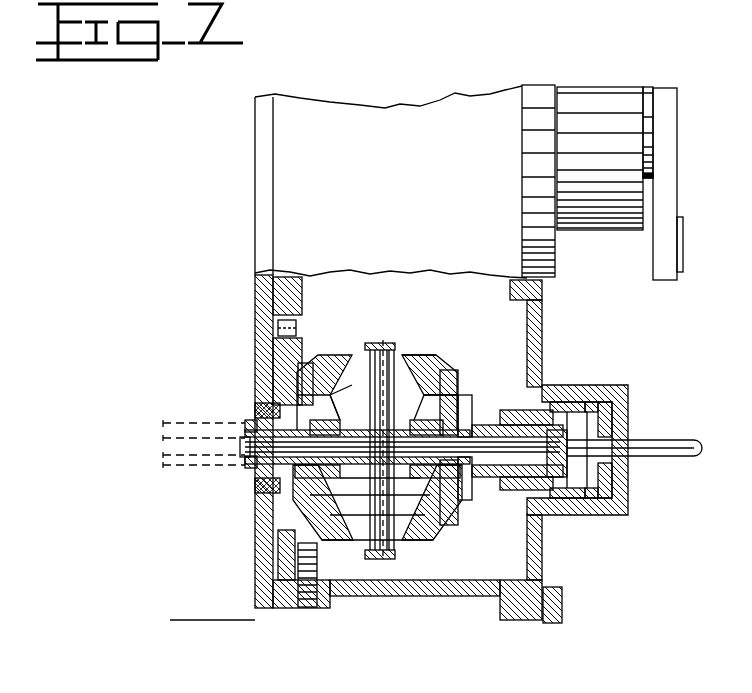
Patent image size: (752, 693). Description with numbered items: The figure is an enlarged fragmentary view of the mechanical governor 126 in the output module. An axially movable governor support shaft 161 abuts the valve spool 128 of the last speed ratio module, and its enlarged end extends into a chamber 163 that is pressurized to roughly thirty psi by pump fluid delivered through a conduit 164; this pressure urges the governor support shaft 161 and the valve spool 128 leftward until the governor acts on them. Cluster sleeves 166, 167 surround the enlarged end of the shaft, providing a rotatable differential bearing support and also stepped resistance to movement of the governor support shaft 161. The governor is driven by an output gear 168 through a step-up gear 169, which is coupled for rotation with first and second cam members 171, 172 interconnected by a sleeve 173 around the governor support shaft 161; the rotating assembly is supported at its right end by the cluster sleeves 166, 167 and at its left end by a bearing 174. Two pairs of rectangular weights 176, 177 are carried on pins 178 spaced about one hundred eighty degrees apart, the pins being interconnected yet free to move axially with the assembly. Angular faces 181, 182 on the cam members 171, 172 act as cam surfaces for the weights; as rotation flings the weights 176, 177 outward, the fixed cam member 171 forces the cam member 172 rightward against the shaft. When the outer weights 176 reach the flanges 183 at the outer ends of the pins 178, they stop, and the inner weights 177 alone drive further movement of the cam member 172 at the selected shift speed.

The mechanical governor 126 is at (480, 597).
The valve spool 128 is at (150, 462).
The governor support shaft 161 is at (253, 468).
The chamber 163 is at (620, 416).
The conduit 164 is at (668, 456).
The cluster sleeve 166 is at (553, 388).
The cluster sleeve 167 is at (592, 390).
The output gear 168 is at (285, 278).
The step-up gear 169 is at (283, 327).
The first cam member 171 is at (300, 372).
The second cam member 172 is at (440, 358).
The sleeve 173 is at (352, 385).
The bearing 174 is at (253, 412).
The weight 176 is at (352, 362).
The weight 177 is at (456, 398).
The pin 178 is at (393, 348).
The face 181 is at (268, 405).
The face 182 is at (455, 365).
The flange 183 is at (386, 345).